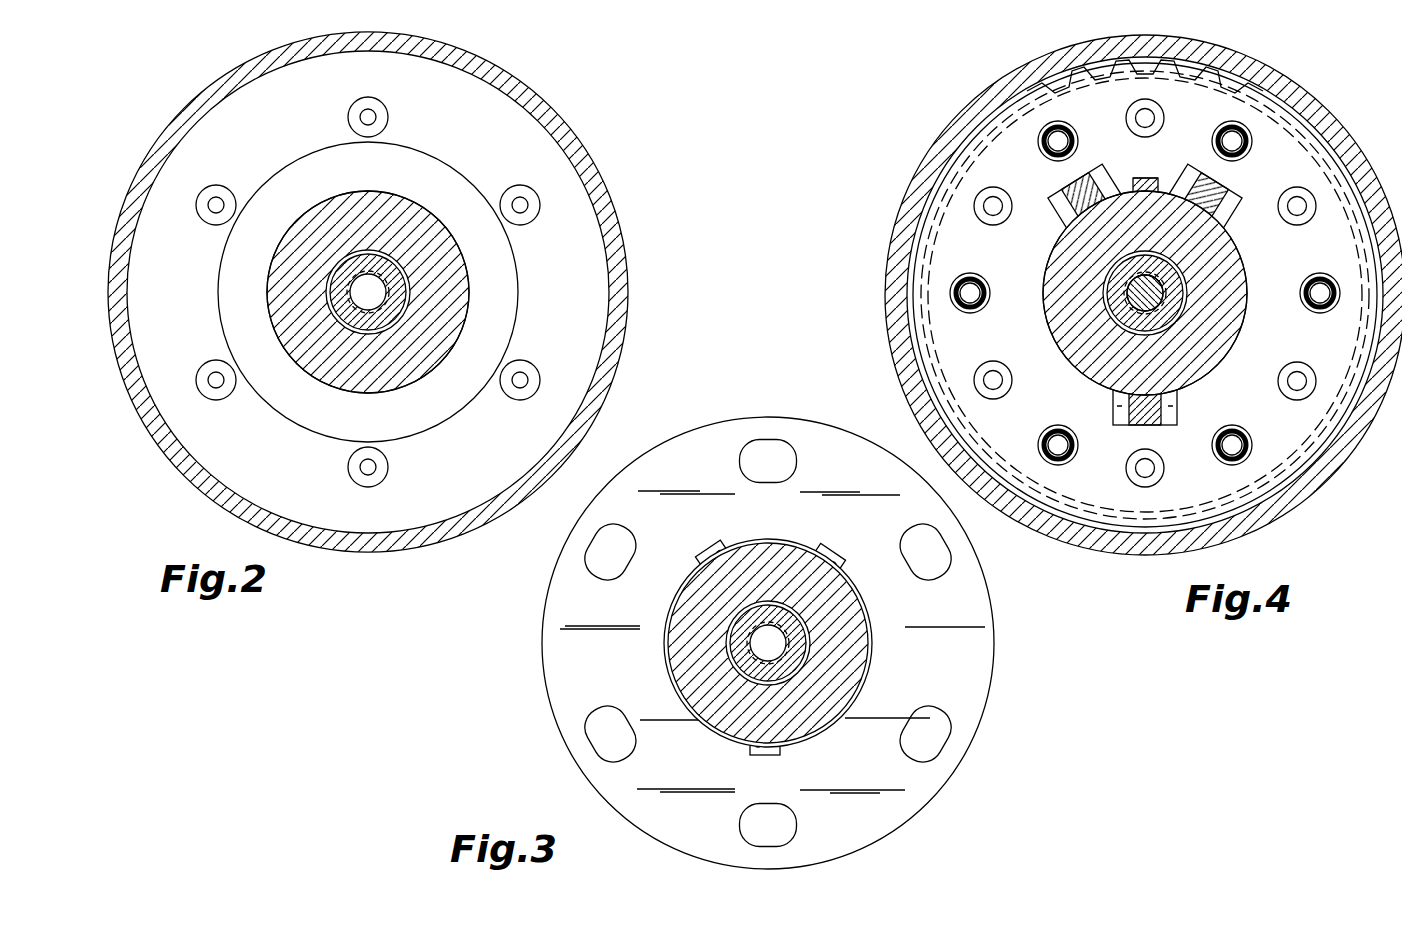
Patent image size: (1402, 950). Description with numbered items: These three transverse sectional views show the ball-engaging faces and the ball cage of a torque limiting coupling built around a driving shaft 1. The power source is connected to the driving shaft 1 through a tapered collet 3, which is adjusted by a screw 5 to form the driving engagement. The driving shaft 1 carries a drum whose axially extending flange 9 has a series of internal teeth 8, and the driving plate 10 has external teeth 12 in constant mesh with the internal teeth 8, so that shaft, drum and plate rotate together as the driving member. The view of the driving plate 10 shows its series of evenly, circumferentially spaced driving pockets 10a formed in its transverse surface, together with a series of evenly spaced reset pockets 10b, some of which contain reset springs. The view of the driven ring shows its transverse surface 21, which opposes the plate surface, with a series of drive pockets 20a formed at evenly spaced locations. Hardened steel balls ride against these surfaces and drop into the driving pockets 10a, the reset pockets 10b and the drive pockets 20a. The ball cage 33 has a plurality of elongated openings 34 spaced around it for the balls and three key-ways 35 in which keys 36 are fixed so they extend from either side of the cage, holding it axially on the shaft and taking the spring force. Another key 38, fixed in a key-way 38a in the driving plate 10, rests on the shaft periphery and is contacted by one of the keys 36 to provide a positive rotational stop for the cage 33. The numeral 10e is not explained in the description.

In FIG. 2, the driving shaft 1 is at (421, 256).
In FIG. 3, the driving shaft 1 is at (851, 601).
In FIG. 4, the driving shaft 1 is at (1232, 323).
In FIG. 2, the tapered collet 3 is at (396, 295).
In FIG. 3, the tapered collet 3 is at (796, 648).
In FIG. 4, the tapered collet 3 is at (1120, 301).
In FIG. 4, the screw 5 is at (1156, 294).
In FIG. 4, the internal teeth 8 is at (1205, 76).
In FIG. 2, the axially extending flange 9 is at (505, 76).
In FIG. 4, the axially extending flange 9 is at (1292, 93).
In FIG. 4, the driving plate 10 is at (1305, 164).
In FIG. 4, the driving pockets 10a is at (1165, 119).
In FIG. 4, the reset pockets 10b is at (1320, 275).
In FIG. 4, the lug notches 10e is at (1051, 216).
In FIG. 4, the external teeth 12 is at (1255, 79).
In FIG. 2, the drive pockets 20a is at (213, 224).
In FIG. 2, the transverse surface 21 is at (545, 141).
In FIG. 3, the ball cage 33 is at (570, 691).
In FIG. 3, the elongated openings 34 is at (772, 450).
In FIG. 3, the key-ways 35 is at (712, 549).
In FIG. 4, the keys 36 is at (1097, 181).
In FIG. 4, the key 38 is at (1156, 178).
In FIG. 4, the key-way 38a is at (1143, 178).